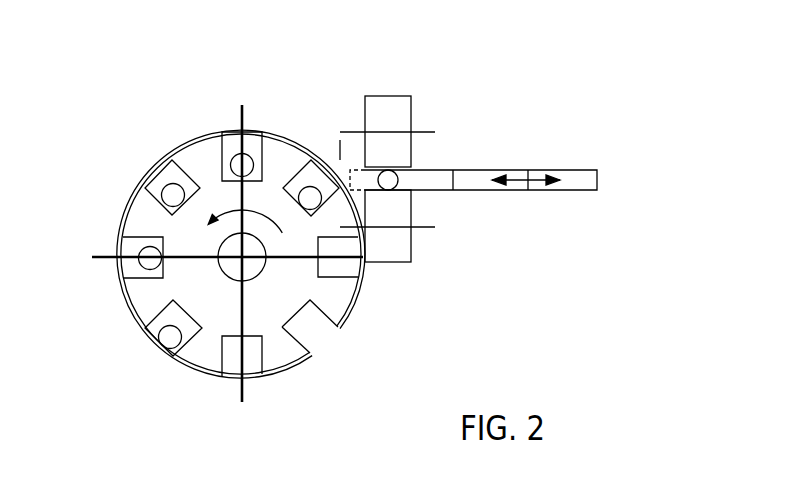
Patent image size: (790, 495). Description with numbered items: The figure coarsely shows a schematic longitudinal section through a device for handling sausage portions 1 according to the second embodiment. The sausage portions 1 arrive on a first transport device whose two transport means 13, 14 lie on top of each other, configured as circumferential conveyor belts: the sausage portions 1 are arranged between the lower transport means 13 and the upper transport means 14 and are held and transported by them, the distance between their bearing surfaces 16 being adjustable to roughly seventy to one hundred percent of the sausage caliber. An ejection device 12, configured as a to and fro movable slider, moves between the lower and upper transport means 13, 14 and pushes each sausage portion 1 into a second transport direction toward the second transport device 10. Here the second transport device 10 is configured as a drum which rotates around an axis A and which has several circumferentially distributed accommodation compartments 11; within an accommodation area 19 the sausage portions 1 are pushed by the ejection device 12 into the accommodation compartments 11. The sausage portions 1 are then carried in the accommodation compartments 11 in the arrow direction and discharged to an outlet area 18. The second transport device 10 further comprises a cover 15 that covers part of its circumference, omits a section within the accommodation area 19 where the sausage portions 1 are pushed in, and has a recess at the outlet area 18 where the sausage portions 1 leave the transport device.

The sausage portion 1 is at (229, 131).
The second transport device 10 is at (197, 126).
The accommodation compartment 11 is at (320, 332).
The ejection device 12 is at (469, 170).
The lower transport means 13 is at (398, 262).
The upper transport means 14 is at (391, 96).
The cover 15 is at (117, 246).
The bearing surface 16 is at (390, 190).
The outlet area 18 is at (251, 370).
The accommodation area 19 is at (348, 160).
The axis A is at (255, 270).